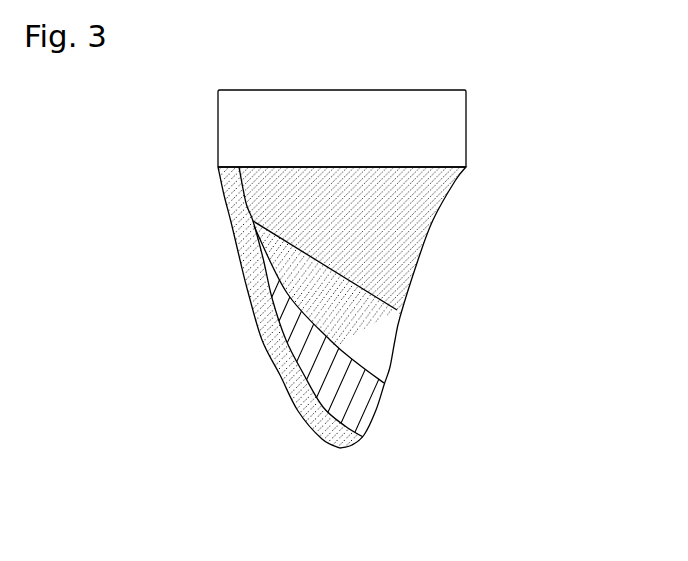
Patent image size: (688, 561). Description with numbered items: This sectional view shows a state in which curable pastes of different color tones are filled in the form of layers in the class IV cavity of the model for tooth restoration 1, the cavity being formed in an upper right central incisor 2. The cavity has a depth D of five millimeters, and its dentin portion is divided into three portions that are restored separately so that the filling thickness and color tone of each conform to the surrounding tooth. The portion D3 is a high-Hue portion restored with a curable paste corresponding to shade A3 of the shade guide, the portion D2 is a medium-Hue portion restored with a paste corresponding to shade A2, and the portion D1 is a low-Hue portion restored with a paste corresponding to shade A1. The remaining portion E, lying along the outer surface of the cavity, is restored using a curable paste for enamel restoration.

The model for tooth restoration 1 is at (540, 102).
The upper right central incisor 2 is at (238, 132).
The enamel restoration portion E is at (236, 257).
The depth of cavity D is at (466, 60).
The low-Hue portion D1 is at (360, 408).
The medium-Hue portion D2 is at (378, 335).
The high-Hue portion D3 is at (413, 243).